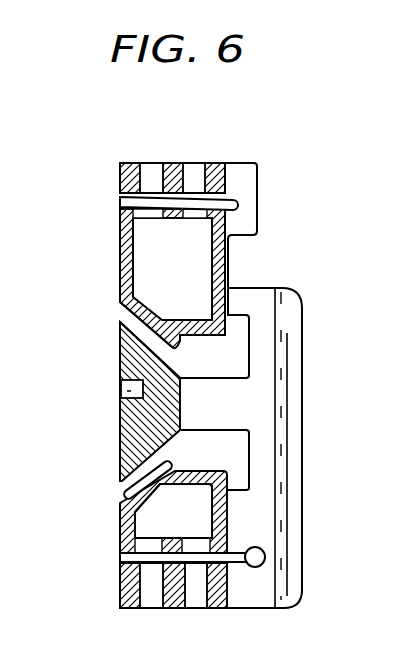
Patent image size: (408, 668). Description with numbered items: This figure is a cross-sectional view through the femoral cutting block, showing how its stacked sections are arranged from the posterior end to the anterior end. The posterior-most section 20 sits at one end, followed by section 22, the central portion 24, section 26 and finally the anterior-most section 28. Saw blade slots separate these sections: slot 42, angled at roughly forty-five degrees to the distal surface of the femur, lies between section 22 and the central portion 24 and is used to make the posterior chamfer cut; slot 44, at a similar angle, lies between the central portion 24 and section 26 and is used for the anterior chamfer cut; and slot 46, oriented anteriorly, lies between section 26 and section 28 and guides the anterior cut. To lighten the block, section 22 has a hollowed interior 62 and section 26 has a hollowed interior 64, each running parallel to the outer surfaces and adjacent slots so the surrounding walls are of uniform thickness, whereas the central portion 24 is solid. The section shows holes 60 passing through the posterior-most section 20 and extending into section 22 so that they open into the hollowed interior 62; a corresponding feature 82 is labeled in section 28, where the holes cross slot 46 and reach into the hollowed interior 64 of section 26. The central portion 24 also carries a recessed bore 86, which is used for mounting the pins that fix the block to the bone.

The section 20 is at (122, 595).
The section 22 is at (120, 515).
The central portion 24 is at (120, 450).
The section 26 is at (230, 267).
The section 28 is at (120, 175).
The saw blade slot 42 is at (123, 492).
The saw blade slot 44 is at (128, 318).
The saw blade slot 46 is at (120, 200).
The holes 60 is at (153, 582).
The hollowed interior 62 is at (152, 523).
The hollowed interior 64 is at (147, 267).
The slot in top block 82 is at (193, 172).
The recessed bore 86 is at (120, 390).